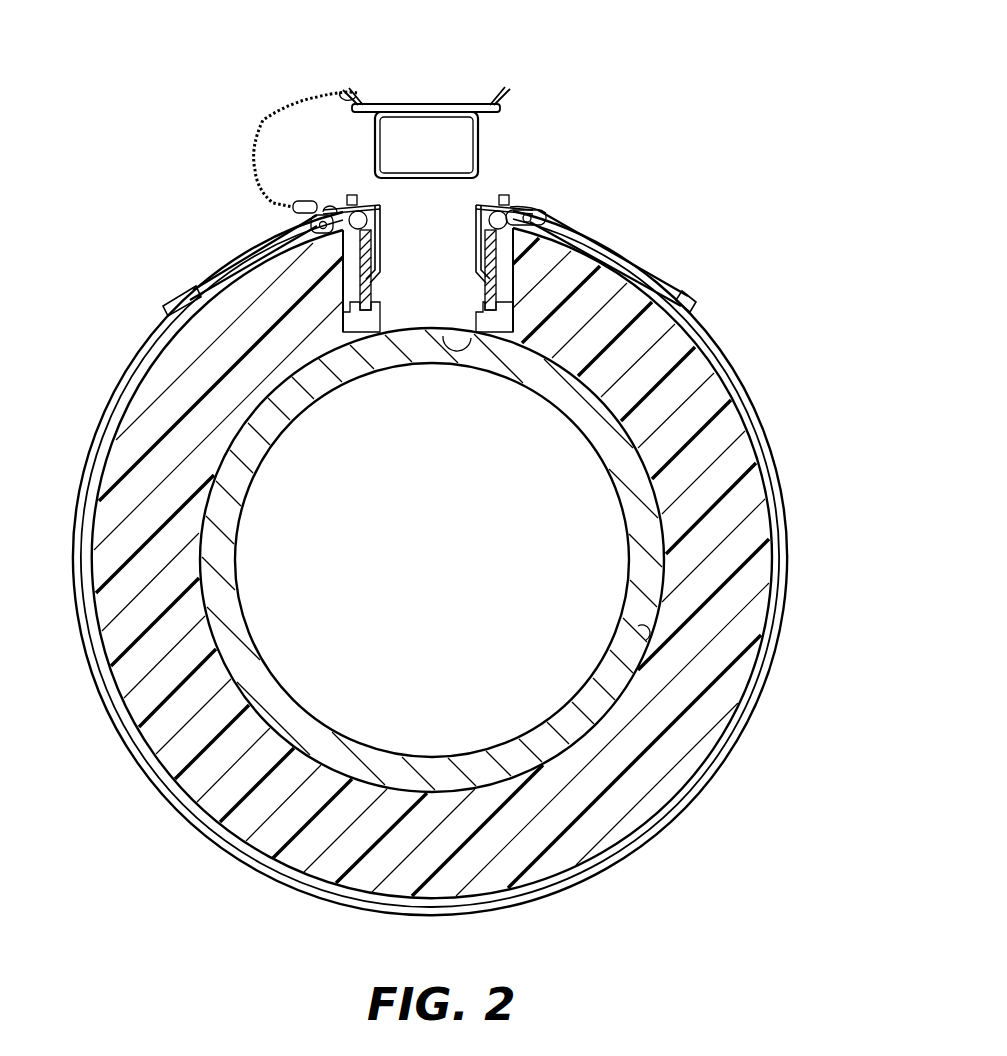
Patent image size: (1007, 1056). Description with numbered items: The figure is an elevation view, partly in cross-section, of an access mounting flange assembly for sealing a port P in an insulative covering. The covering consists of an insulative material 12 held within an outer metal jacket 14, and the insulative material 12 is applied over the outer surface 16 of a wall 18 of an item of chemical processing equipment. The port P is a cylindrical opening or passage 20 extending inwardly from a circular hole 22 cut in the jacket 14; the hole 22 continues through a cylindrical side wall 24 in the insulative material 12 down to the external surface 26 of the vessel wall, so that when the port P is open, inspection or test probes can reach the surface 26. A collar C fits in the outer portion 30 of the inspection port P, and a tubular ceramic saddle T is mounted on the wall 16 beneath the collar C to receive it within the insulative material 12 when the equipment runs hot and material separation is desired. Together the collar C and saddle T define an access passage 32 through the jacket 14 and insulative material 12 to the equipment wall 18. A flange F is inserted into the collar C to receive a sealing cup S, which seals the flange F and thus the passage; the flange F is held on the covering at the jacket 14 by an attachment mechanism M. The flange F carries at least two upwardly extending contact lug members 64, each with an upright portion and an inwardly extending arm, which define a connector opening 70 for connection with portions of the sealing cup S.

The insulative material 12 is at (727, 490).
The outer metal jacket 14 is at (778, 568).
The outer surface of wall 16 is at (650, 645).
The wall 18 is at (617, 680).
The cylindrical opening or passage 20 is at (546, 221).
The circular hole 22 is at (442, 206).
The cylindrical side wall 24 is at (343, 327).
The external surface 26 is at (590, 258).
The outer portion of inspection port 30 is at (510, 217).
The access passage 32 is at (396, 322).
The contact lug members 64 is at (349, 195).
The connector opening or space 70 is at (356, 204).
The sealing cup S is at (516, 78).
The port P is at (510, 166).
The flange F is at (323, 190).
The collar C is at (277, 243).
The attachment or mounting mechanism M is at (645, 232).
The tubular ceramic saddle T is at (345, 287).